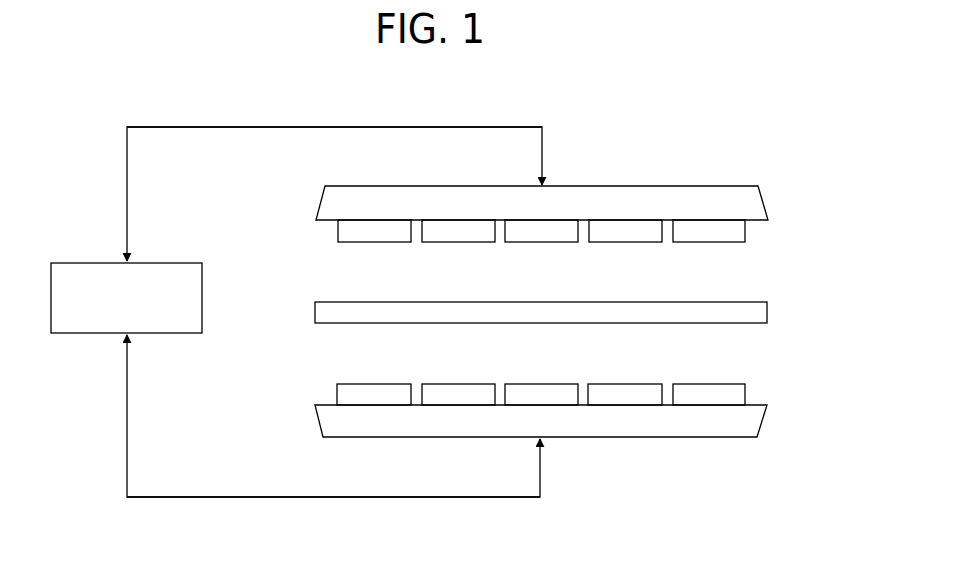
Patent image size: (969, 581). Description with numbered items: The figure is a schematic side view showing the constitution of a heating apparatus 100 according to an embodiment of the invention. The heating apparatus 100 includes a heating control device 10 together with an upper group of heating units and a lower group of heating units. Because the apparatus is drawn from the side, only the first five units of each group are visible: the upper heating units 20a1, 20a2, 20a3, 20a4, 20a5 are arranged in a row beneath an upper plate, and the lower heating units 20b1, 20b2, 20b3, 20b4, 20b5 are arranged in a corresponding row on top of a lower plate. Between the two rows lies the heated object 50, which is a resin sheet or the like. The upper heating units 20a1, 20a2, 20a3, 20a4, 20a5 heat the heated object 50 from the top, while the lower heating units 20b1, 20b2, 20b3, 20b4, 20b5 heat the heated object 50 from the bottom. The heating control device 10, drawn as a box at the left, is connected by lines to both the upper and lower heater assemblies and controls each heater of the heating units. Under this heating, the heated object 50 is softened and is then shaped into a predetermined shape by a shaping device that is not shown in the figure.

The heating apparatus 100 is at (612, 113).
The heating control device 10 is at (153, 263).
The heating unit 20a1 is at (374, 242).
The heating unit 20a2 is at (458, 242).
The heating unit 20a3 is at (541, 242).
The heating unit 20a4 is at (625, 242).
The heating unit 20a5 is at (709, 242).
The heating unit 20b1 is at (373, 384).
The heating unit 20b2 is at (457, 384).
The heating unit 20b3 is at (540, 384).
The heating unit 20b4 is at (624, 384).
The heating unit 20b5 is at (708, 384).
The heated object 50 is at (760, 314).